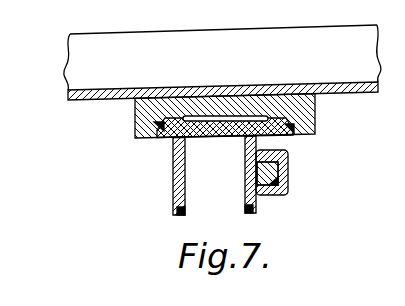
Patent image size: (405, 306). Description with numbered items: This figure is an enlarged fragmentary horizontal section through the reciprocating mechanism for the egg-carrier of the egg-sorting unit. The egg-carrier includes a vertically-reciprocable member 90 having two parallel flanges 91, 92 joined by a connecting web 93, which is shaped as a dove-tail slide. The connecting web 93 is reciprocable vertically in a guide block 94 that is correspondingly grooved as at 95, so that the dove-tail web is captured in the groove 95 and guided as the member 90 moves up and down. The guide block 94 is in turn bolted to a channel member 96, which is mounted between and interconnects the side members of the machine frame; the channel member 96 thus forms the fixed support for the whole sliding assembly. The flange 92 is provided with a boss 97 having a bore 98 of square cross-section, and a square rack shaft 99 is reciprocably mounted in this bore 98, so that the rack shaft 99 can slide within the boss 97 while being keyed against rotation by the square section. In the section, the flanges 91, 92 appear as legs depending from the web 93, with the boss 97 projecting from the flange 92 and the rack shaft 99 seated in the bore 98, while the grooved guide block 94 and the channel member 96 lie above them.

The vertically-reciprocable member 90 is at (173, 190).
The flange 91 is at (180, 215).
The flange 92 is at (252, 213).
The connecting web 93 is at (203, 137).
The guide block 94 is at (316, 108).
The groove 95 is at (158, 130).
The channel member 96 is at (360, 73).
The boss 97 is at (288, 184).
The bore 98 is at (288, 168).
The rack shaft 99 is at (275, 189).